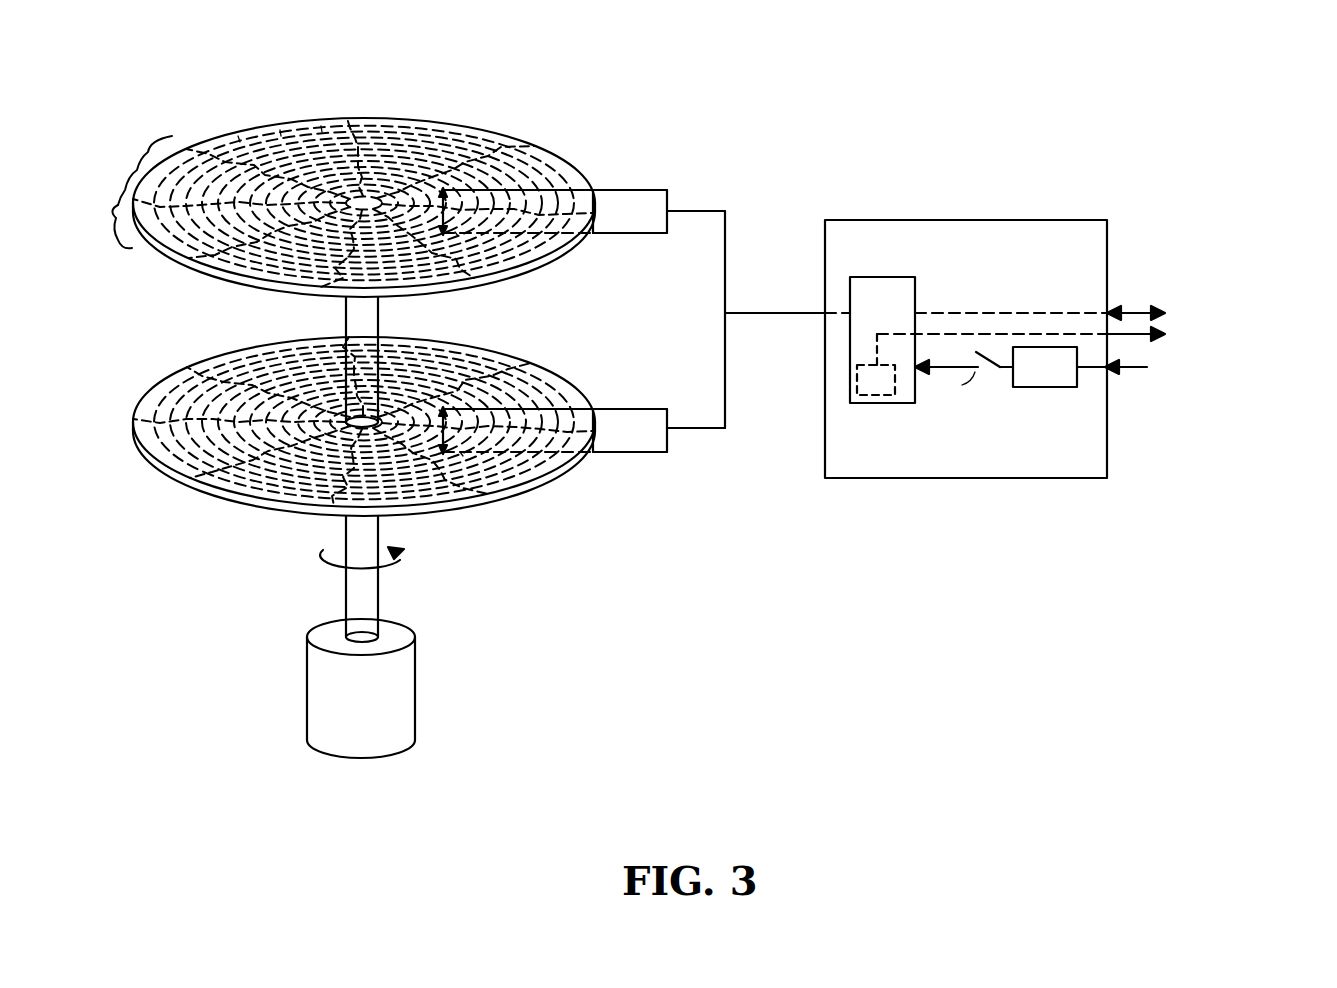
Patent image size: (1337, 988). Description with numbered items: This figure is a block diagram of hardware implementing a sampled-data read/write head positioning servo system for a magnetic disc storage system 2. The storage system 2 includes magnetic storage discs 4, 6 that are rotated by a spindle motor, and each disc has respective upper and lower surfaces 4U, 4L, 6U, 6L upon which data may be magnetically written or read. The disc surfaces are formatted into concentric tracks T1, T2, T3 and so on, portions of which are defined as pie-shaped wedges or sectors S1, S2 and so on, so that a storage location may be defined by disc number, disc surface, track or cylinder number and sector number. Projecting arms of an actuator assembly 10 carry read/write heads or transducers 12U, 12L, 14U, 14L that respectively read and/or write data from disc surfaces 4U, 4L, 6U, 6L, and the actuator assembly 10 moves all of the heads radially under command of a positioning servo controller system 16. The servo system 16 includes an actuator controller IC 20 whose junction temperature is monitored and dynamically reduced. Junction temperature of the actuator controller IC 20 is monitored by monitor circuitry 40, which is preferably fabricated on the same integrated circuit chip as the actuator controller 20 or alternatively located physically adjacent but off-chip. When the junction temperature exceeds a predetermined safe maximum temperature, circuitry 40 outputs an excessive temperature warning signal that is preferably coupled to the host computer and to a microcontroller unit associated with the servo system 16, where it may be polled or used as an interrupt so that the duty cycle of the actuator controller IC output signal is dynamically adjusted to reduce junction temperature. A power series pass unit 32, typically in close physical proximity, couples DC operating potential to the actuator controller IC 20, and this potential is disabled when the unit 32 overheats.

The magnetic disc storage system 2 is at (806, 72).
The magnetic storage disc 4 is at (450, 103).
The upper surface of disc 4 4U is at (490, 138).
The lower surface of disc 4 4L is at (185, 265).
The magnetic storage disc 6 is at (548, 340).
The upper surface of disc 6 6U is at (170, 380).
The lower surface of disc 6 6L is at (180, 475).
The actuator assembly 10 is at (733, 455).
The read/write head 12U is at (455, 187).
The read/write head 12L is at (458, 236).
The read/write head 14U is at (455, 405).
The read/write head 14L is at (462, 455).
The servo controller system 16 is at (947, 200).
The actuator controller IC 20 is at (862, 275).
The power series pass unit 32 is at (1060, 385).
The monitor circuitry 40 is at (872, 398).
The track T1 is at (241, 138).
The track T2 is at (281, 132).
The track T3 is at (322, 128).
The sector S1 is at (95, 226).
The sector S2 is at (134, 162).